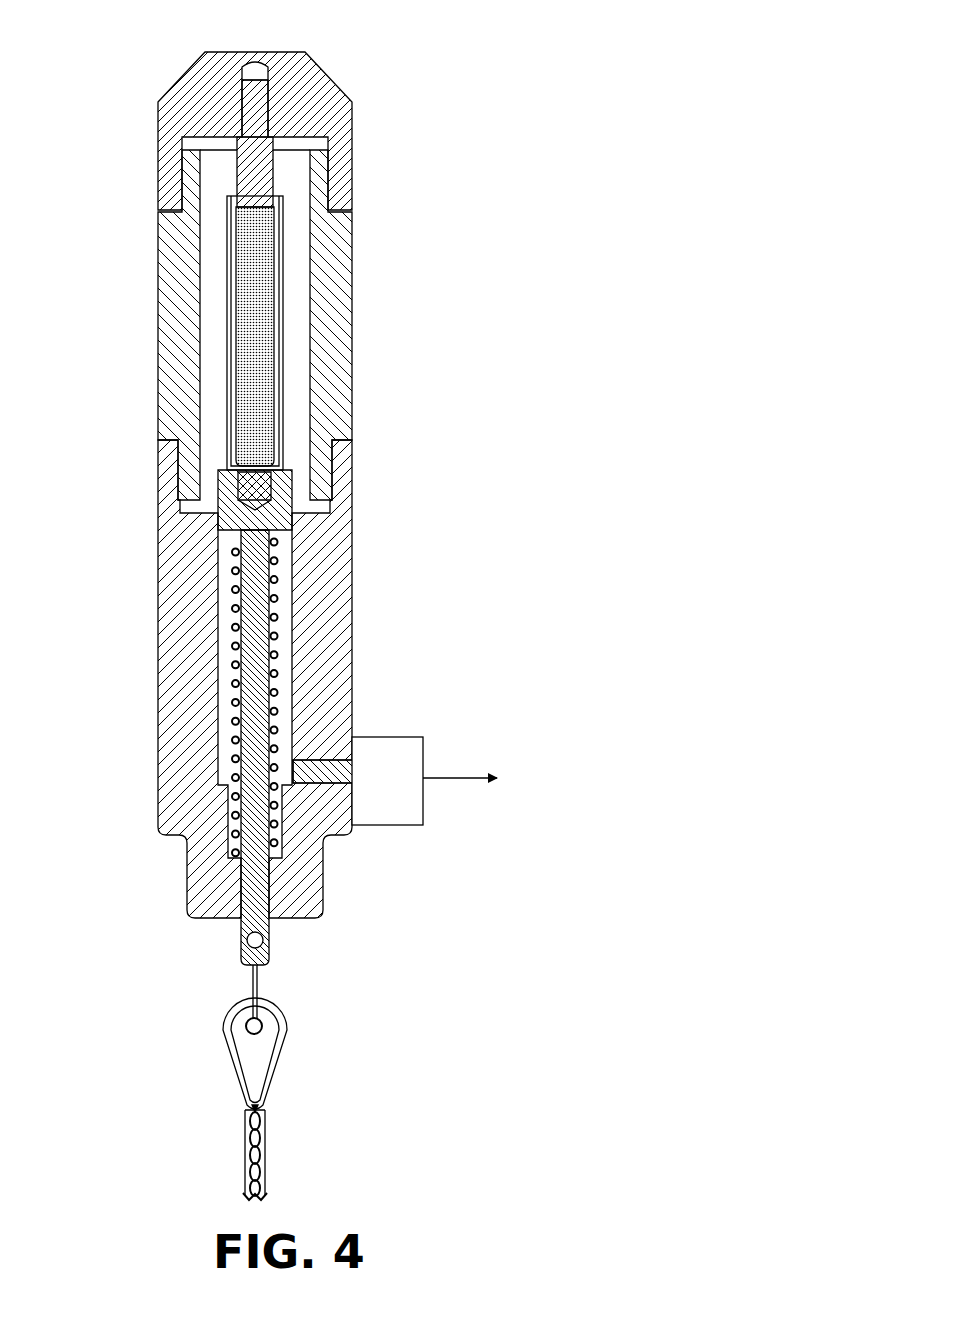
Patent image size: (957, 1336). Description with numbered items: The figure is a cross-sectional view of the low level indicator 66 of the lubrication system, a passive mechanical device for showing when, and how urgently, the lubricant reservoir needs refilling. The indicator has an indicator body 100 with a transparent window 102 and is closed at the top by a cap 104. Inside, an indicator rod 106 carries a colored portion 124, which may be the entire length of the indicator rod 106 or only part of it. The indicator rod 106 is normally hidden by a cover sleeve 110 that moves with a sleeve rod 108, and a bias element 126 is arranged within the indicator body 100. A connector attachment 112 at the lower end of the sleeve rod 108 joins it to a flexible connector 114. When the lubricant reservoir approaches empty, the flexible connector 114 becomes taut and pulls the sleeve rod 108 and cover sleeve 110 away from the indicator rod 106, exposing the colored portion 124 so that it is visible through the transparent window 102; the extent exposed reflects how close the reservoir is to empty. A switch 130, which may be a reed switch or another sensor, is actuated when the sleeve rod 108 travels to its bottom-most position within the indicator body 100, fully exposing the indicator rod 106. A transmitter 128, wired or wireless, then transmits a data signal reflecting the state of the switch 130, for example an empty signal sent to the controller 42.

The low level indicator 66 is at (452, 53).
The indicator body 100 is at (330, 712).
The transparent window 102 is at (340, 276).
The cap 104 is at (205, 95).
The indicator rod 106 is at (248, 180).
The sleeve rod 108 is at (248, 670).
The cover sleeve 110 is at (283, 395).
The connector attachment 112 is at (278, 1048).
The flexible connector 114 is at (264, 1153).
The colored portion 124 is at (247, 327).
The bias element 126 is at (274, 635).
The transmitter 128 is at (423, 817).
The switch 130 is at (357, 770).
The controller 42 is at (561, 789).